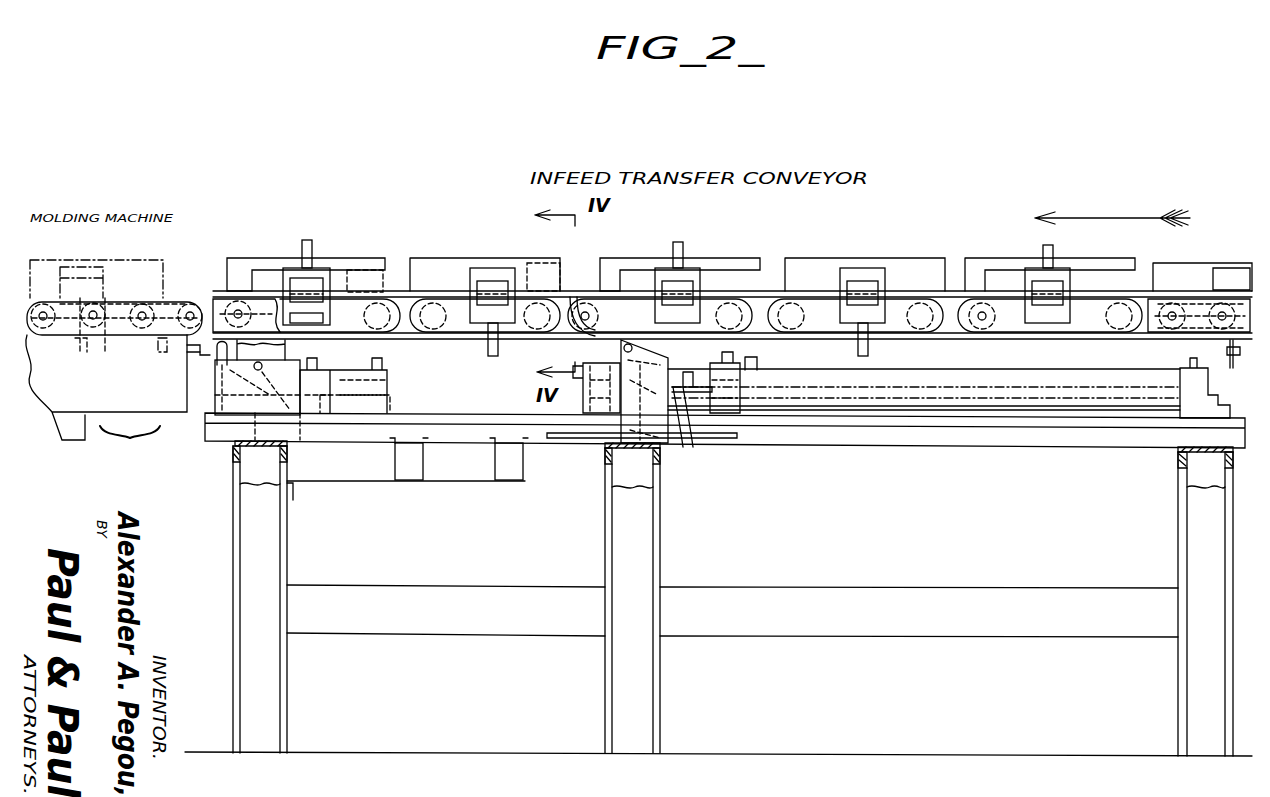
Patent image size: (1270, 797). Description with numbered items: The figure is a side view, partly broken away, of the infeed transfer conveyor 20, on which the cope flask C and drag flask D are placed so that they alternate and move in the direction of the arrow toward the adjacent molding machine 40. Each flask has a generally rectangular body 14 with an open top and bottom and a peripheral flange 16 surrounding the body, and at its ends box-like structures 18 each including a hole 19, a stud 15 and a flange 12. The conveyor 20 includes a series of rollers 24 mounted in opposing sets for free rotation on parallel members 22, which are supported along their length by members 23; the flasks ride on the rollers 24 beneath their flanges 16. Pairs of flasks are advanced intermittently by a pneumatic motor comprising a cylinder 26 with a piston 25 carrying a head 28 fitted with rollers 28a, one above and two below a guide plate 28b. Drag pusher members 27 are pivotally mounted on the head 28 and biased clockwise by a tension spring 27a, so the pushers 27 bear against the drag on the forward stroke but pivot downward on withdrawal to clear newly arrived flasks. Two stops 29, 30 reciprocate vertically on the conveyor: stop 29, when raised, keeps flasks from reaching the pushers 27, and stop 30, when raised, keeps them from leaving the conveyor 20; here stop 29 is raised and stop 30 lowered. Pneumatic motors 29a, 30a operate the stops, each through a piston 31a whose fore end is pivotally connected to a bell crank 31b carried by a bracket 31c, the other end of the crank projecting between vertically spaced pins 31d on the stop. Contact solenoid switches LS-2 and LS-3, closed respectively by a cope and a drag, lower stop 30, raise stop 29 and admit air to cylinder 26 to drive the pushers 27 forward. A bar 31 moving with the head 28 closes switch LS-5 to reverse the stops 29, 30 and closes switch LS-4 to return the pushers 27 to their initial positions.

The flange 12 is at (265, 260).
The body 14 is at (232, 278).
The stud 15 is at (308, 258).
The peripheral flange 16 is at (765, 297).
The box-like structure 18 is at (472, 290).
The hole 19 is at (492, 268).
The infeed transfer conveyor 20 is at (222, 468).
The parallel members 22 is at (1157, 332).
The members 23 is at (267, 472).
The rollers 24 is at (238, 286).
The piston 25 is at (685, 432).
The cylinder 26 is at (948, 375).
The drag pusher members 27 is at (187, 352).
The tension spring 27a is at (579, 391).
The head 28 is at (645, 350).
The rollers 28a is at (605, 440).
The guide plate 28b is at (1000, 418).
The stop 29 is at (573, 298).
The pneumatically operated motor 29a is at (725, 440).
The stop 30 is at (220, 352).
The pneumatically operated motor 30a is at (378, 388).
The bar 31 is at (558, 445).
The piston 31a is at (350, 415).
The bell crank 31b is at (290, 472).
The bracket 31c is at (220, 440).
The pins 31d is at (215, 395).
The molding machine 40 is at (130, 449).
The cope flask C is at (244, 260).
The drag flask D is at (156, 262).
The contact solenoid switch LS-2 is at (373, 268).
The contact solenoid switch LS-3 is at (543, 265).
The solenoid switch LS-4 is at (410, 485).
The solenoid switch LS-5 is at (510, 485).